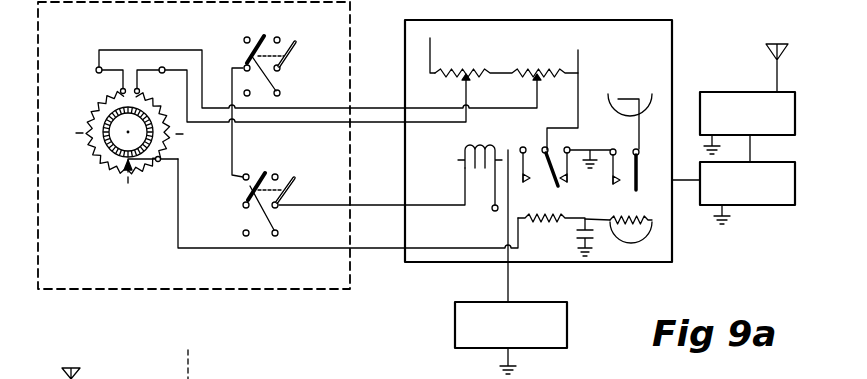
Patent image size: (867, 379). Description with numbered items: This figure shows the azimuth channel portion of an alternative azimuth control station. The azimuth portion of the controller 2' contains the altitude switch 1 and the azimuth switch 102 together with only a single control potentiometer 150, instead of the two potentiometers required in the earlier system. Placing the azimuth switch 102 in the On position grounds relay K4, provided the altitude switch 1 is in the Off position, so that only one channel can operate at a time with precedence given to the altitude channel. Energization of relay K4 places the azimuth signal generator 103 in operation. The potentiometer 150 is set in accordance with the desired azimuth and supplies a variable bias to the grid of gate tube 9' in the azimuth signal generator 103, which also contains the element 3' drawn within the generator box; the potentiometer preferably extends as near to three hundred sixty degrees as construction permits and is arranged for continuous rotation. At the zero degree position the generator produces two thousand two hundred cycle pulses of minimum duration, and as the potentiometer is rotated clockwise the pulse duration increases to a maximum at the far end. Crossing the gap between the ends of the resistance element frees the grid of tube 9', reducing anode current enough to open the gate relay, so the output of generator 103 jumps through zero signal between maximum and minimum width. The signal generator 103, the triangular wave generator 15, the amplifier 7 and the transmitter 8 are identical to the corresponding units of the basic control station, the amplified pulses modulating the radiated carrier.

The altitude switch 1 is at (240, 28).
The azimuth switch 102 is at (284, 216).
The control potentiometer 150 is at (97, 172).
The controller 2' is at (194, 158).
The azimuth signal generator 103 is at (538, 161).
The relay K4 is at (480, 178).
The electromagnet 3' is at (639, 121).
The gate tube 9' is at (639, 237).
The triangular wave generator 15 is at (544, 303).
The transmitter 8 is at (747, 99).
The amplifier 7 is at (771, 160).